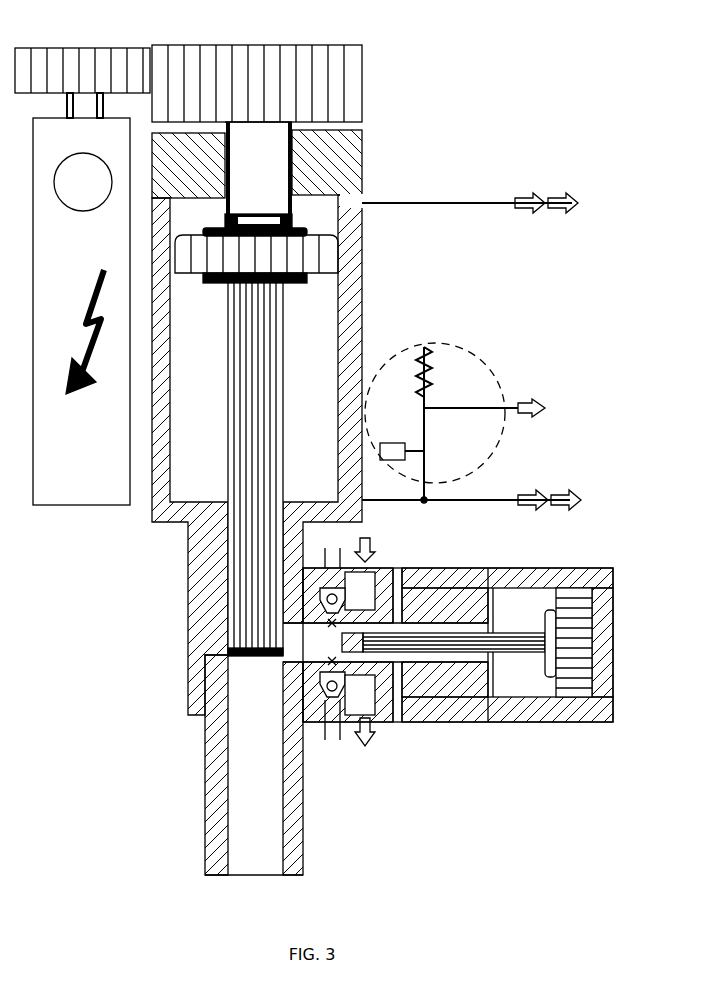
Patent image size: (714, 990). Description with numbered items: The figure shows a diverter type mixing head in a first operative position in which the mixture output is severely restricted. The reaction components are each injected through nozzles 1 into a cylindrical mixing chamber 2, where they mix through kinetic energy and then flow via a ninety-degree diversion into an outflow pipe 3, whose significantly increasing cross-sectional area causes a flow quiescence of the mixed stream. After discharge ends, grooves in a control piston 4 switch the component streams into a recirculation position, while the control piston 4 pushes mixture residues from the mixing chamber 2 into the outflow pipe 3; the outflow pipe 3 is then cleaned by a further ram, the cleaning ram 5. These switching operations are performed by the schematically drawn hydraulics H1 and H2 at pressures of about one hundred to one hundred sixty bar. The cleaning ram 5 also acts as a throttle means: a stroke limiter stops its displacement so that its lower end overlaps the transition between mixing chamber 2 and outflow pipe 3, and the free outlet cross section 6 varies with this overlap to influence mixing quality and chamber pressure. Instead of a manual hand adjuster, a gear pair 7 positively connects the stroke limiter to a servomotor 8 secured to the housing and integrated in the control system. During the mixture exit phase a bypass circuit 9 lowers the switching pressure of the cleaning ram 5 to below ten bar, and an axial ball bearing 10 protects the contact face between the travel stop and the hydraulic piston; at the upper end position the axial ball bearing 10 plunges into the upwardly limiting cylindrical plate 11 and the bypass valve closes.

The nozzles 1 is at (352, 667).
The cylindrical mixing chamber 2 is at (307, 648).
The outflow pipe 3 is at (255, 752).
The control piston 4 is at (418, 643).
The cleaning ram 5 is at (257, 595).
The free outlet cross section 6 is at (273, 657).
The gear pair 7 is at (270, 85).
The servomotor 8 is at (78, 410).
The bypass circuit 9 is at (475, 360).
The axial ball bearing 10 is at (289, 218).
The cylindrical plate 11 is at (347, 172).
The hydraulics H1 is at (470, 203).
The hydraulics H2 is at (478, 500).